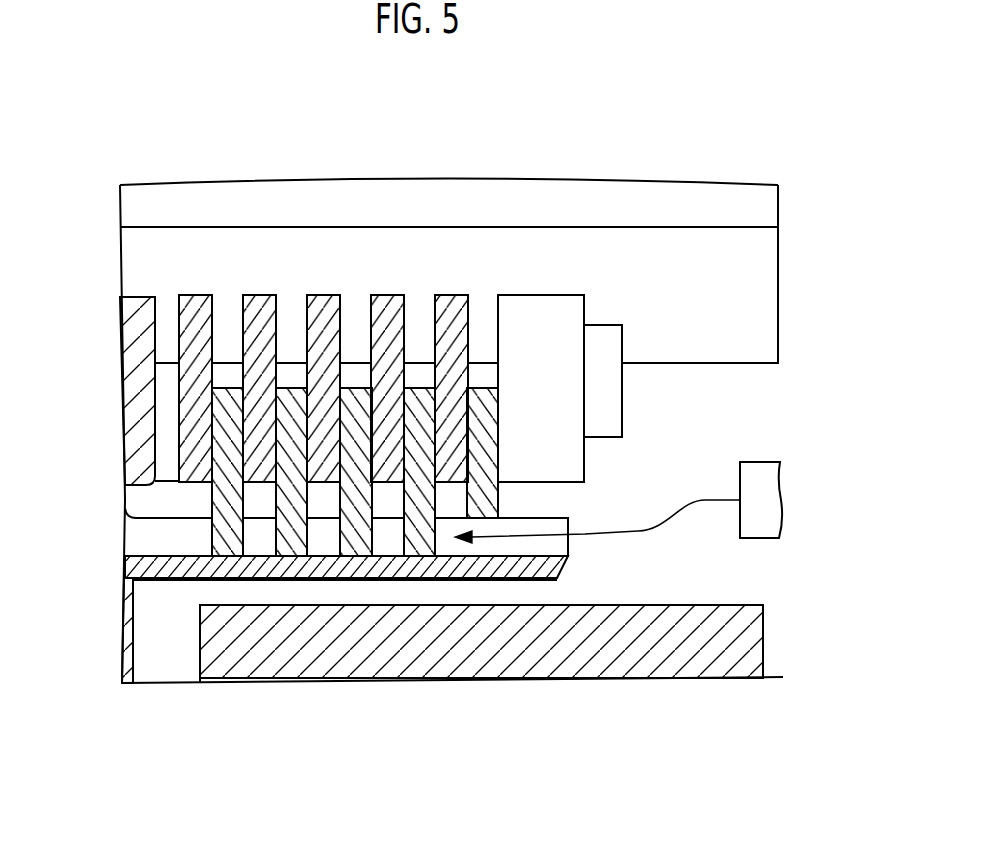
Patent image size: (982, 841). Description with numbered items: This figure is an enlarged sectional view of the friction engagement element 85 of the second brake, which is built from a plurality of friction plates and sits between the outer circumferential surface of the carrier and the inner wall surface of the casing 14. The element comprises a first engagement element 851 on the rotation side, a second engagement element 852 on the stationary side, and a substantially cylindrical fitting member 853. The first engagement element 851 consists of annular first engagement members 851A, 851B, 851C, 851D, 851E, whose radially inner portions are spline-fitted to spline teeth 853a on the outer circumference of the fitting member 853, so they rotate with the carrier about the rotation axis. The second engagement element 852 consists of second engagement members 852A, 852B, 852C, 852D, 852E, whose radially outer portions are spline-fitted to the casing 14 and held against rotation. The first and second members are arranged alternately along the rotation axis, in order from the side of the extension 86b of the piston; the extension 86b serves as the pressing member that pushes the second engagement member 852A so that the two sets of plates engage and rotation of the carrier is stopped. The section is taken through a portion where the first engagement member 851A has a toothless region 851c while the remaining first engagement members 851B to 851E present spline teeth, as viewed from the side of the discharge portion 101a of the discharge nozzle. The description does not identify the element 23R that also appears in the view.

The casing 14 is at (763, 293).
The friction engagement element 85 is at (527, 283).
The extension 86b is at (128, 398).
The second engagement element 852 is at (322, 275).
The second engagement member 852A is at (468, 302).
The second engagement member 852B is at (388, 295).
The second engagement member 852C is at (327, 295).
The second engagement member 852D is at (262, 295).
The second engagement member 852E is at (197, 295).
The first engagement element 851 is at (386, 593).
The first engagement member 851A is at (488, 527).
The first engagement member 851B is at (420, 500).
The first engagement member 851C is at (358, 500).
The first engagement member 851D is at (293, 498).
The first engagement member 851E is at (228, 498).
The toothless region 851c is at (541, 621).
The fitting member 853 is at (540, 570).
The spline teeth 853a is at (553, 548).
The discharge portion 101a is at (760, 478).
The right side frame 23R is at (763, 648).